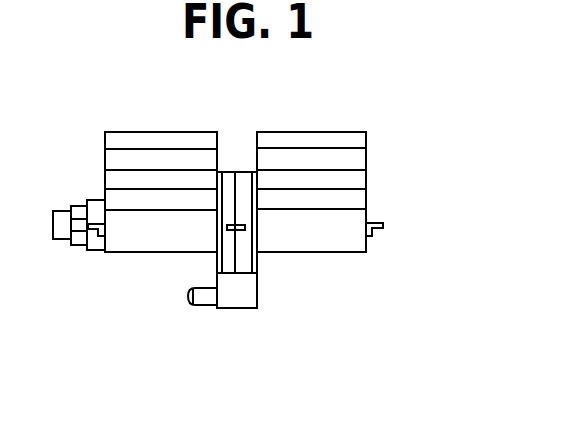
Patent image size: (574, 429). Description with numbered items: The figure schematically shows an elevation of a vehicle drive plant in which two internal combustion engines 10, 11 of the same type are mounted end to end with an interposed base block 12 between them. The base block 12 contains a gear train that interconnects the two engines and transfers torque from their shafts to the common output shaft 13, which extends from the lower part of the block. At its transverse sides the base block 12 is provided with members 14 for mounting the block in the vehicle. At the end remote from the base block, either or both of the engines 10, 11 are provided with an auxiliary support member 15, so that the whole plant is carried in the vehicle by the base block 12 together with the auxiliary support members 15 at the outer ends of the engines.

The internal combustion engine 10 is at (141, 140).
The internal combustion engine 11 is at (329, 140).
The base block 12 is at (243, 257).
The common output shaft 13 is at (203, 300).
The members for mounting the block 14 is at (232, 232).
The auxiliary support member 15 is at (97, 241).